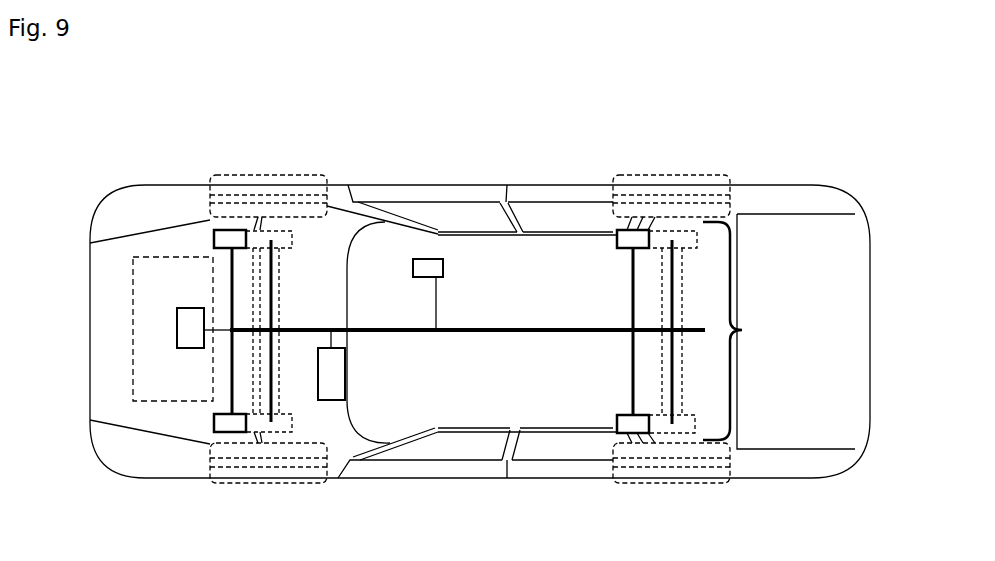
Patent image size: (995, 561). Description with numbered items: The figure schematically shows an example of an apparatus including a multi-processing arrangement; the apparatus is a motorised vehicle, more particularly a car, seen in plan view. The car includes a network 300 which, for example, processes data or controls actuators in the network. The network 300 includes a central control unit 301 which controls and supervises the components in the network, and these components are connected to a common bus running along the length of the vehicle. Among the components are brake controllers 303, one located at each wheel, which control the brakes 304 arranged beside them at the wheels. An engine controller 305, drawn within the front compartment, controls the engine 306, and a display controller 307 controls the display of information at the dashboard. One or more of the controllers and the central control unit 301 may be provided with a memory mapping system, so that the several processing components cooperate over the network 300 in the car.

The network 300 is at (480, 329).
The central control unit 301 is at (432, 266).
The brake controllers 303 is at (234, 241).
The brakes 304 is at (270, 242).
The engine controller 305 is at (191, 325).
The engine 306 is at (193, 284).
The display controller 307 is at (333, 374).